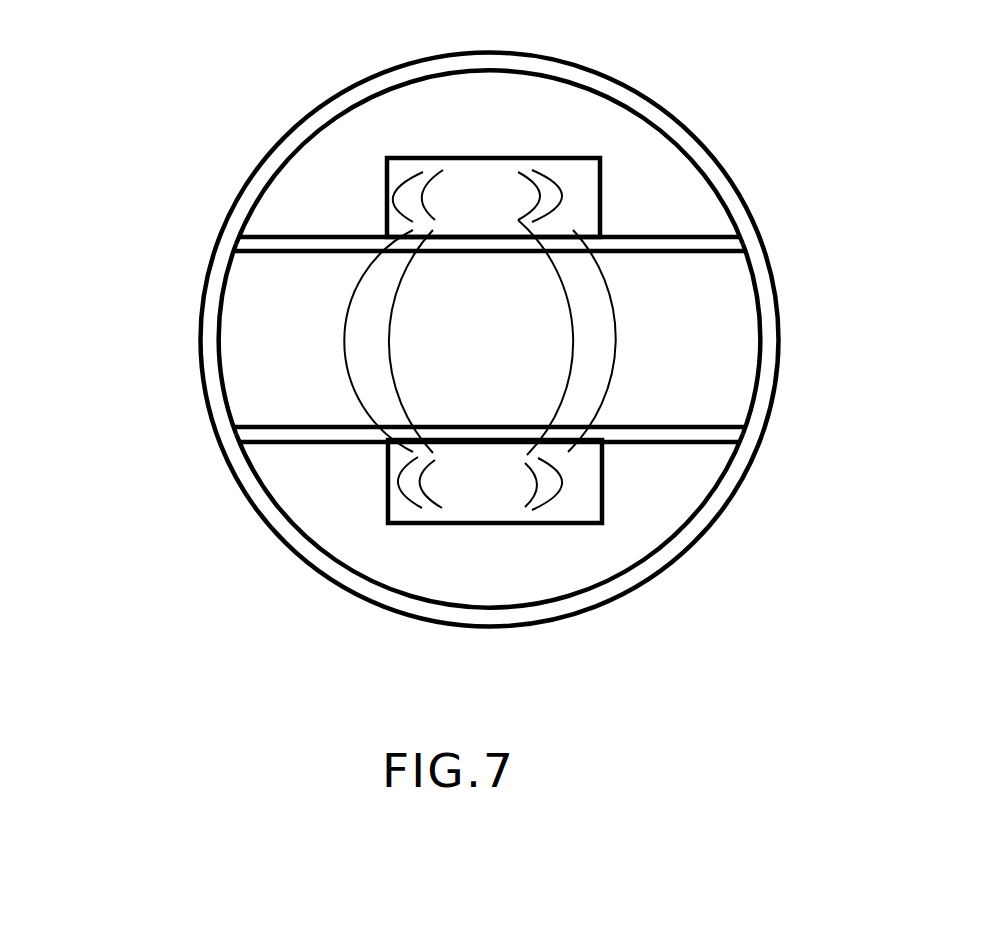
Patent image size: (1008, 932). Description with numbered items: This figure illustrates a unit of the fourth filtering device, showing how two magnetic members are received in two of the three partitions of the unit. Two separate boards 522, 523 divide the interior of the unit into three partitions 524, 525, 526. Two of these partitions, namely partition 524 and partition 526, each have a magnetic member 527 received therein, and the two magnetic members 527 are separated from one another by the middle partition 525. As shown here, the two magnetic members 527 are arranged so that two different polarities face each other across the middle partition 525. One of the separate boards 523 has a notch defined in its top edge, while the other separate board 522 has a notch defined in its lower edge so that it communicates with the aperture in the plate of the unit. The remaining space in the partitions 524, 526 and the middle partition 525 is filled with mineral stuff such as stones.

The separate board 522 is at (273, 243).
The separate board 523 is at (288, 430).
The partition 524 is at (643, 157).
The middle partition 525 is at (250, 348).
The partition 526 is at (620, 553).
The magnetic member 527 is at (578, 480).